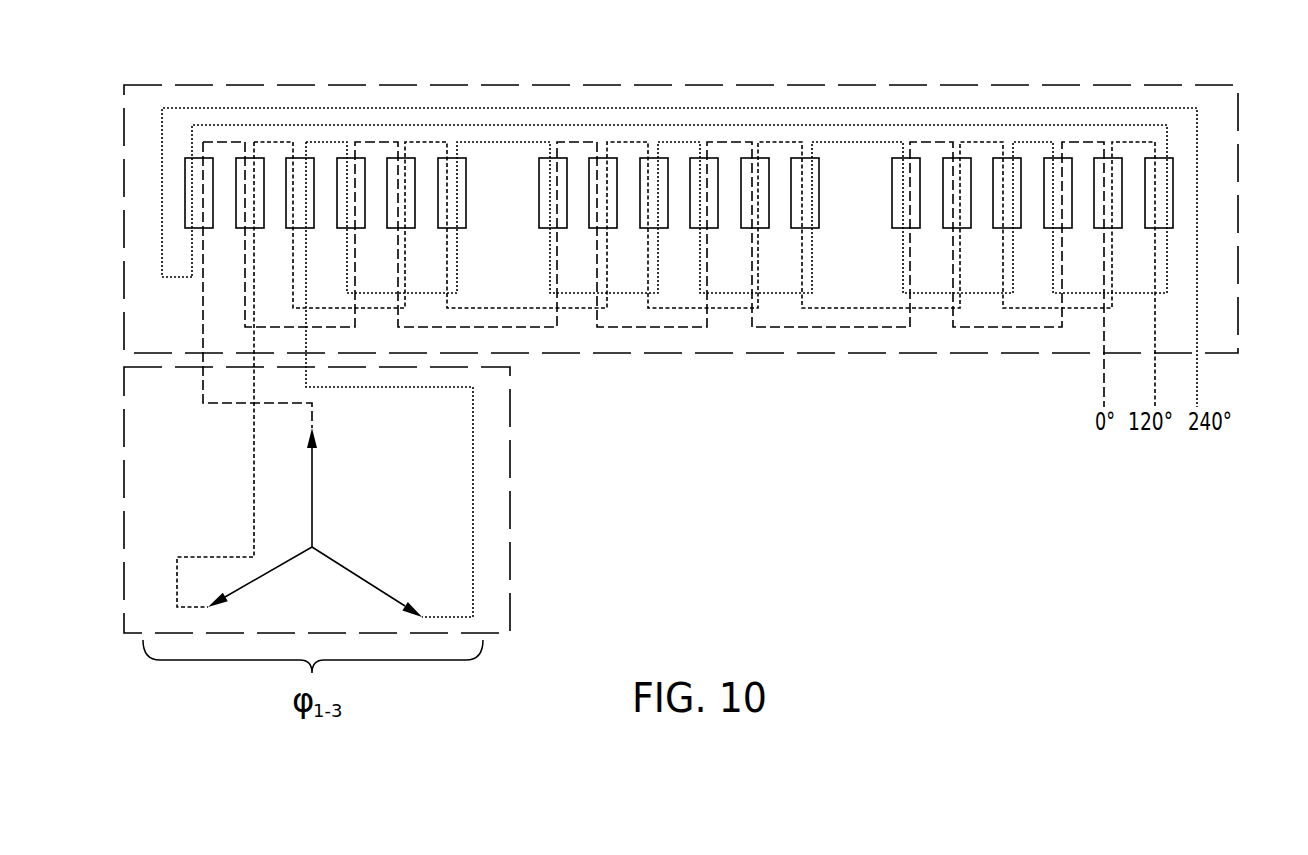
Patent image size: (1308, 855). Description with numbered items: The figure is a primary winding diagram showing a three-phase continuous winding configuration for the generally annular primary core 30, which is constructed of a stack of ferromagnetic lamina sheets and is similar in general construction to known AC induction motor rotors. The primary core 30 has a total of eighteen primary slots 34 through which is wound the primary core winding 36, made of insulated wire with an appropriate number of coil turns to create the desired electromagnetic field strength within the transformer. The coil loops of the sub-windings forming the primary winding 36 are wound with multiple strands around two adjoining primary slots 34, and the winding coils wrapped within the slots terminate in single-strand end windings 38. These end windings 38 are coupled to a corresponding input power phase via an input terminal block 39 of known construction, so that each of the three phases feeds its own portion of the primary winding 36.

The primary core 30 is at (708, 67).
The primary slots 34 is at (1173, 187).
The primary core winding 36 is at (900, 267).
The end windings 38 is at (948, 108).
The input terminal block 39 is at (512, 520).